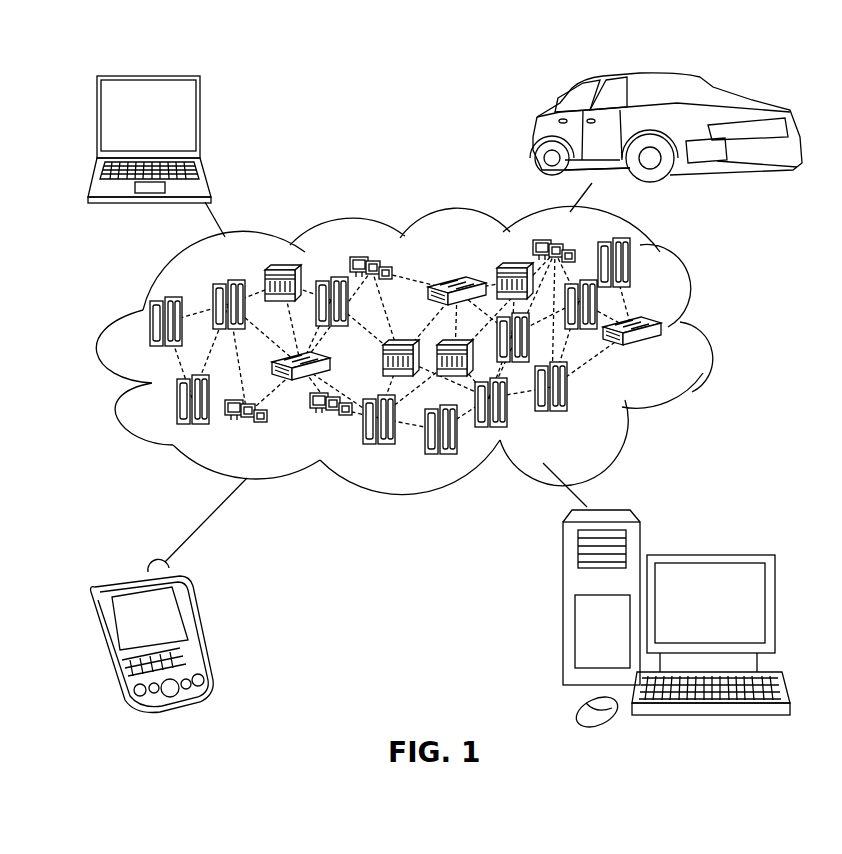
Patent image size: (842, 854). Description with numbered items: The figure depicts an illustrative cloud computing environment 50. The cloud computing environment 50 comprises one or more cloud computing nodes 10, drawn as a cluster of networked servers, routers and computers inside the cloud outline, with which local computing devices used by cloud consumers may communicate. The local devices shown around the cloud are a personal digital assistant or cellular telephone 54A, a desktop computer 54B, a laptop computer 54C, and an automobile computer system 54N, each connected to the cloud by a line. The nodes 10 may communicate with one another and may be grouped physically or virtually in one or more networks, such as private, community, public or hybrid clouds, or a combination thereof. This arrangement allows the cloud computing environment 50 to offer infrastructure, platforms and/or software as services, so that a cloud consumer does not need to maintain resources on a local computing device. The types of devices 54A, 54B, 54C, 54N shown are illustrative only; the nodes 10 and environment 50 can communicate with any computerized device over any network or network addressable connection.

The cloud computing nodes 10 is at (672, 353).
The cloud computing environment 50 is at (705, 331).
The personal digital assistant or cellular telephone 54A is at (200, 623).
The desktop computer 54B is at (706, 552).
The laptop computer 54C is at (203, 122).
The automobile computer system 54N is at (536, 132).